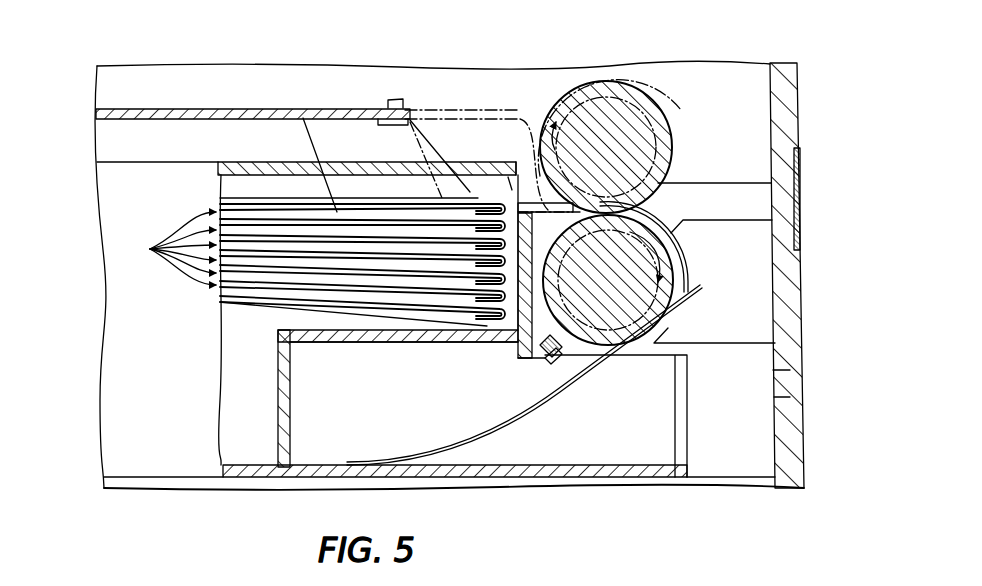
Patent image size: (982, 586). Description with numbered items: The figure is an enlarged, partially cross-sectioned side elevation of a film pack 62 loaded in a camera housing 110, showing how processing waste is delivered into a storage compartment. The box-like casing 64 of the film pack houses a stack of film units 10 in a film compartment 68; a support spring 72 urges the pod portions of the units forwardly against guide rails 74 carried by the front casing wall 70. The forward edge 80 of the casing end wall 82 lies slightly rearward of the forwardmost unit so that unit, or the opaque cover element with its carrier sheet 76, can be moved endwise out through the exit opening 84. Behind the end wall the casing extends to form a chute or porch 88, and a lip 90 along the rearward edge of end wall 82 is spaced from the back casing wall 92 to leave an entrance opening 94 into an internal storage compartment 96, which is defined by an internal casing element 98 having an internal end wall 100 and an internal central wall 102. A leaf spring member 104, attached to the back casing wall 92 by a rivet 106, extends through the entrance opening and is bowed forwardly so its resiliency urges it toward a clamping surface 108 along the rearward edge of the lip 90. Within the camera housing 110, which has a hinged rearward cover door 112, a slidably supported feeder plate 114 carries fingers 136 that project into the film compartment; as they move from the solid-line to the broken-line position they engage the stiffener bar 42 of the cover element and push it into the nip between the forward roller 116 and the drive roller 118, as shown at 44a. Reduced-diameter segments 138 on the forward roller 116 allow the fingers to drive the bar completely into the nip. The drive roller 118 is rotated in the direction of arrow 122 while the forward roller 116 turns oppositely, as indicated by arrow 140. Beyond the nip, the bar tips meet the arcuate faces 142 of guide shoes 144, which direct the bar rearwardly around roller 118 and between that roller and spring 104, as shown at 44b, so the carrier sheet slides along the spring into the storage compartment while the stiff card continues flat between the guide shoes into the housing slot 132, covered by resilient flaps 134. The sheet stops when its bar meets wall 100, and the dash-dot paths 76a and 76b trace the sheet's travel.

The film unit 10 is at (169, 248).
The stiffener bar 42 is at (533, 216).
The stiffener bar in roller nip 44a is at (655, 213).
The stiffener bar between roller and spring 44b is at (696, 280).
The film pack 62 is at (161, 161).
The casing 64 is at (118, 305).
The film compartment 68 is at (222, 368).
The front casing wall 70 is at (268, 162).
The support spring 72 is at (398, 317).
The guide rails 74 is at (480, 185).
The carrier sheet of cover element 76 is at (362, 205).
The sheet path centerline 76a is at (525, 164).
The sheet path around roller 76b is at (685, 262).
The forward edge of casing end wall 80 is at (501, 177).
The casing end wall 82 is at (549, 340).
The exit opening 84 is at (520, 212).
The chute or porch 88 is at (690, 468).
The lip 90 is at (550, 358).
The back casing wall 92 is at (540, 478).
The entrance opening 94 is at (488, 409).
The internal storage compartment 96 is at (298, 375).
The internal casing element 98 is at (276, 333).
The internal end wall 100 is at (284, 410).
The internal central wall 102 is at (312, 332).
The leaf spring member 104 is at (420, 440).
The rivet 106 is at (253, 464).
The clamping surface 108 is at (560, 362).
The camera housing 110 is at (800, 90).
The rearward cover door 112 is at (802, 430).
The feeder plate 114 is at (181, 108).
The forward roller 116 is at (668, 128).
The drive roller 118 is at (645, 342).
The arrow 122 is at (647, 257).
The slot 132 is at (770, 190).
The resilient flaps 134 is at (801, 215).
The fingers 136 is at (410, 118).
The reduced-diameter segments 138 is at (606, 105).
The arrow 140 is at (563, 125).
The arcuate faces 142 is at (660, 333).
The guide shoes 144 is at (755, 345).